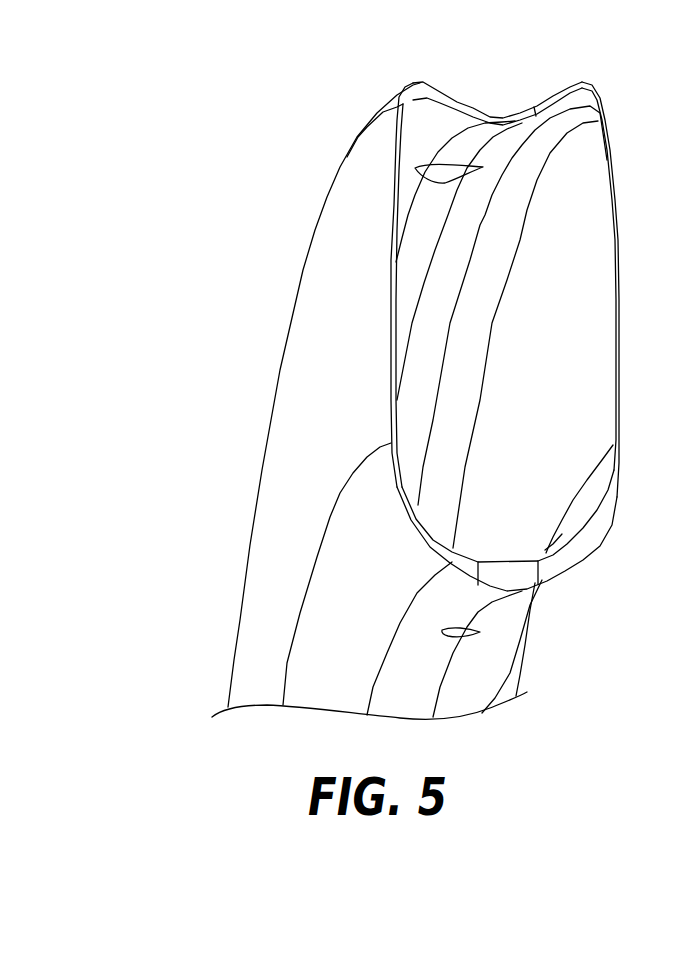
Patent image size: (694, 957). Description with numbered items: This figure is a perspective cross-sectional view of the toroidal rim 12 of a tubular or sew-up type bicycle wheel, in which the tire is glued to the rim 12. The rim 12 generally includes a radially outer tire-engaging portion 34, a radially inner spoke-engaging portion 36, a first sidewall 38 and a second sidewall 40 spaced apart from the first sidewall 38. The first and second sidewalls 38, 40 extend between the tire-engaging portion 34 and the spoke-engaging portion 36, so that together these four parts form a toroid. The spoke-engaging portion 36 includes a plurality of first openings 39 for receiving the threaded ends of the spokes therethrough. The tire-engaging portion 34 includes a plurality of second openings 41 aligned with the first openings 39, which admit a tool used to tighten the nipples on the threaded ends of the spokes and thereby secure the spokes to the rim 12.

The toroidal rim 12 is at (247, 333).
The radially outer tire-engaging portion 34 is at (457, 92).
The radially inner spoke-engaging portion 36 is at (588, 557).
The first sidewall 38 is at (389, 332).
The first openings 39 is at (472, 636).
The second sidewall 40 is at (620, 311).
The second openings 41 is at (415, 169).